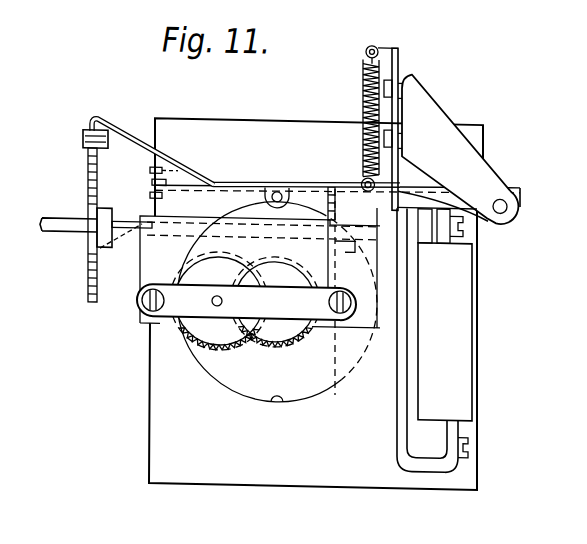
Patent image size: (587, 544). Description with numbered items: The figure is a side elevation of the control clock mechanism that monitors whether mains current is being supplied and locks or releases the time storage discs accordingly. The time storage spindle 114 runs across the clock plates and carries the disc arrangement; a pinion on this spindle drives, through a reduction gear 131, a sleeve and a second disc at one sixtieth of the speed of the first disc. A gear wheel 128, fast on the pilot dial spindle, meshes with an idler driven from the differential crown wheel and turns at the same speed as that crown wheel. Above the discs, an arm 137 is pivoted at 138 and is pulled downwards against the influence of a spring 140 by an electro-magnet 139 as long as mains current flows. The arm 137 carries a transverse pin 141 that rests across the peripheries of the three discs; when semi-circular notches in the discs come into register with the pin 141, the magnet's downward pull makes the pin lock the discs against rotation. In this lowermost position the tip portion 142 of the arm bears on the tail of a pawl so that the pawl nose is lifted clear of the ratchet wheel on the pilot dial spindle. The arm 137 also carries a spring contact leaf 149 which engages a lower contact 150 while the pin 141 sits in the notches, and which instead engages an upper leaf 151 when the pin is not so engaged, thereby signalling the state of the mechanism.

The time storage spindle 114 is at (275, 301).
The gear wheel 128 is at (336, 385).
The reduction gear 131 is at (202, 322).
The arm 137 is at (237, 180).
The pivot 138 is at (505, 201).
The electro-magnet 139 is at (442, 306).
The spring 140 is at (364, 102).
The transverse pin 141 is at (280, 186).
The tip portion 142 is at (98, 114).
The spring contact leaf 149 is at (150, 181).
The lower contact 150 is at (100, 245).
The upper leaf 151 is at (151, 216).